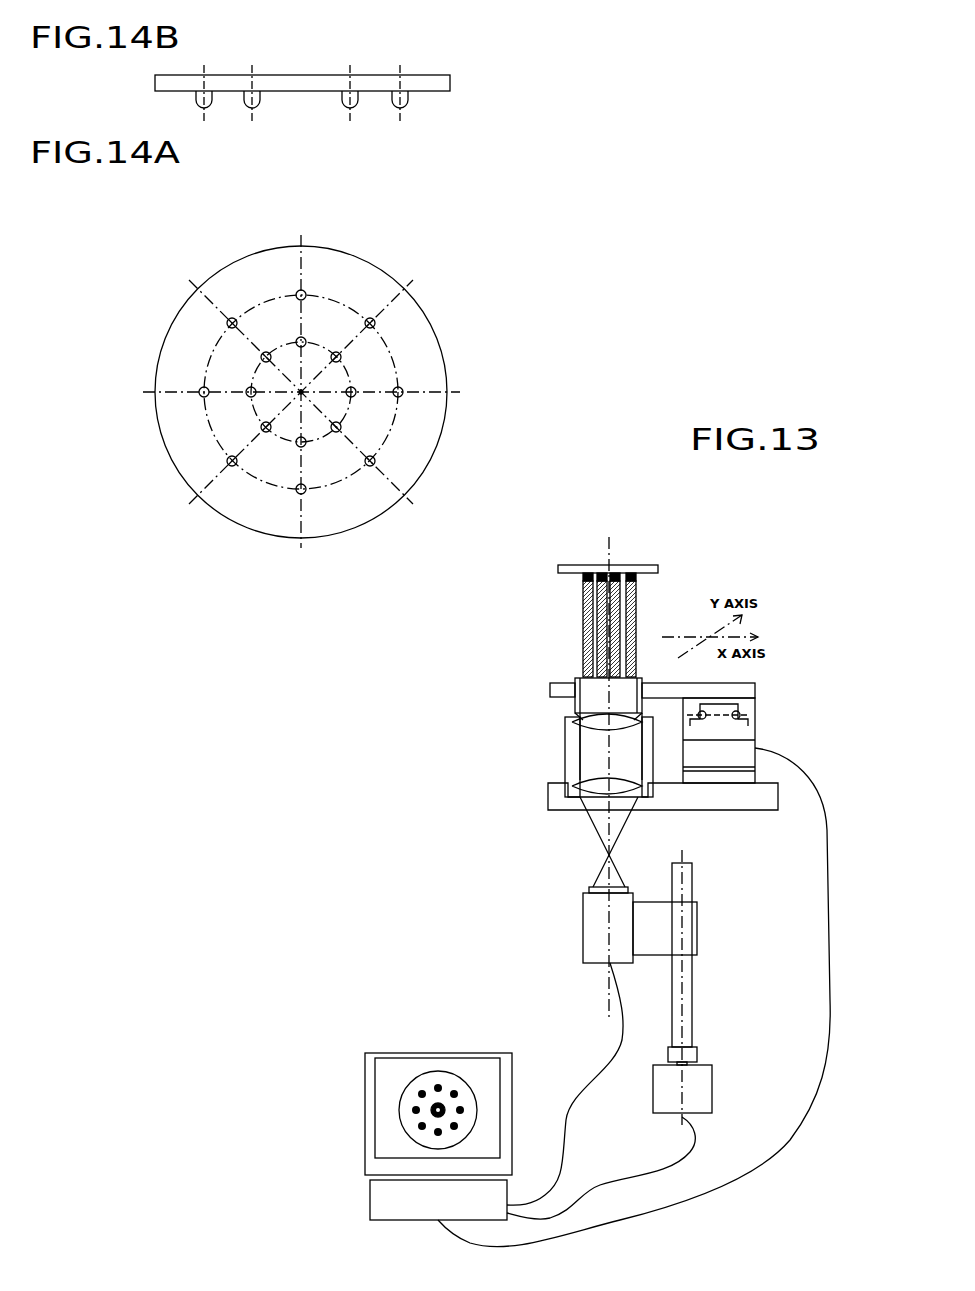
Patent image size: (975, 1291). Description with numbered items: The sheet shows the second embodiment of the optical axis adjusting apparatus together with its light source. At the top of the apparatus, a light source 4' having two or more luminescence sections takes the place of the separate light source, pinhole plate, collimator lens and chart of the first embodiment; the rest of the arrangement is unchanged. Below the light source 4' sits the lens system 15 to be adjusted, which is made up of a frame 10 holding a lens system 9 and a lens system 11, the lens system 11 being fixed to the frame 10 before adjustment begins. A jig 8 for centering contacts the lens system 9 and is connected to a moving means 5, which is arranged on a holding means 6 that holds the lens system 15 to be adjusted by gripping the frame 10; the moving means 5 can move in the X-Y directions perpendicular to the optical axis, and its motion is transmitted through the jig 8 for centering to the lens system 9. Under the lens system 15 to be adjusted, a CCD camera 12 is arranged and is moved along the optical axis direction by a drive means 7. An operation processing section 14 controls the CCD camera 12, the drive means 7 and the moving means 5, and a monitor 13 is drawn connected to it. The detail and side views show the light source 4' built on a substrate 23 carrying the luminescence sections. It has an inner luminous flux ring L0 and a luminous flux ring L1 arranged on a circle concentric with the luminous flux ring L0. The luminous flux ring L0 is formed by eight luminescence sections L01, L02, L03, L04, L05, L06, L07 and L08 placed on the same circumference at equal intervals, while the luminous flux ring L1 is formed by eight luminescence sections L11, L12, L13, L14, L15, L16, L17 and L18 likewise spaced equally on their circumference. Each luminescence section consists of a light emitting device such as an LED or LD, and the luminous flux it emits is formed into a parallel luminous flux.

In FIG. 14B, the substrate 23 is at (430, 85).
In FIG. 14A, the luminous flux ring L0 is at (325, 346).
In FIG. 14A, the luminous flux ring L1 is at (386, 443).
In FIG. 14A, the luminescence section L01 is at (305, 341).
In FIG. 14A, the luminescence section L02 is at (341, 357).
In FIG. 14A, the luminescence section L03 is at (356, 393).
In FIG. 14A, the luminescence section L04 is at (338, 432).
In FIG. 14A, the luminescence section L05 is at (301, 447).
In FIG. 14A, the luminescence section L06 is at (261, 428).
In FIG. 14A, the luminescence section L07 is at (247, 391).
In FIG. 14A, the luminescence section L08 is at (264, 352).
In FIG. 14A, the luminescence section L11 is at (304, 292).
In FIG. 14A, the luminescence section L12 is at (375, 322).
In FIG. 14A, the luminescence section L13 is at (403, 394).
In FIG. 14A, the luminescence section L14 is at (372, 465).
In FIG. 14A, the luminescence section L15 is at (300, 490).
In FIG. 14A, the luminescence section L16 is at (228, 460).
In FIG. 14A, the luminescence section L17 is at (201, 390).
In FIG. 14A, the luminescence section L18 is at (230, 319).
In FIG. 13, the light source 4' is at (660, 575).
In FIG. 13, the moving means 5 is at (747, 707).
In FIG. 13, the holding means 6 is at (737, 797).
In FIG. 13, the drive means 7 is at (690, 993).
In FIG. 13, the jig for centering 8 is at (624, 690).
In FIG. 13, the lens system 9 is at (600, 720).
In FIG. 13, the frame 10 is at (572, 750).
In FIG. 13, the lens system 11 is at (598, 792).
In FIG. 13, the CCD camera 12 is at (598, 935).
In FIG. 13, the monitor 13 is at (392, 1083).
In FIG. 13, the operation processing section 14 is at (392, 1202).
In FIG. 13, the lens system to be adjusted 15 is at (438, 652).